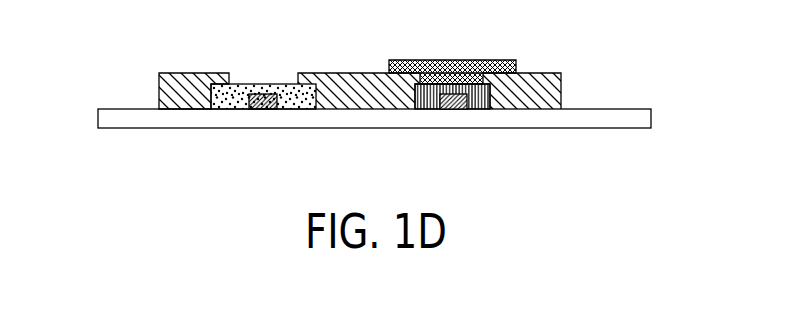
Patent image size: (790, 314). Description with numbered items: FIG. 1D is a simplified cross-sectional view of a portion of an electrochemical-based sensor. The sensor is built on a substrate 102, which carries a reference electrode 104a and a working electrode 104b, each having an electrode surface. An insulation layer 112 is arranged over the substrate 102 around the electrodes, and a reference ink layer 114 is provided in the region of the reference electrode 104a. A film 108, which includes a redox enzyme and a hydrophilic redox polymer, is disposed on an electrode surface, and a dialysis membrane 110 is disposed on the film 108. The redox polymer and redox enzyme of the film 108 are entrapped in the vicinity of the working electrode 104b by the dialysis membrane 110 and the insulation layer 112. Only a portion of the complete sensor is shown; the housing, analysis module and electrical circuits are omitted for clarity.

The substrate 102 is at (597, 130).
The reference electrode 104a is at (262, 108).
The working electrode 104b is at (457, 108).
The film 108 is at (482, 108).
The dialysis membrane 110 is at (465, 60).
The insulation layer 112 is at (195, 72).
The reference ink layer 114 is at (230, 108).